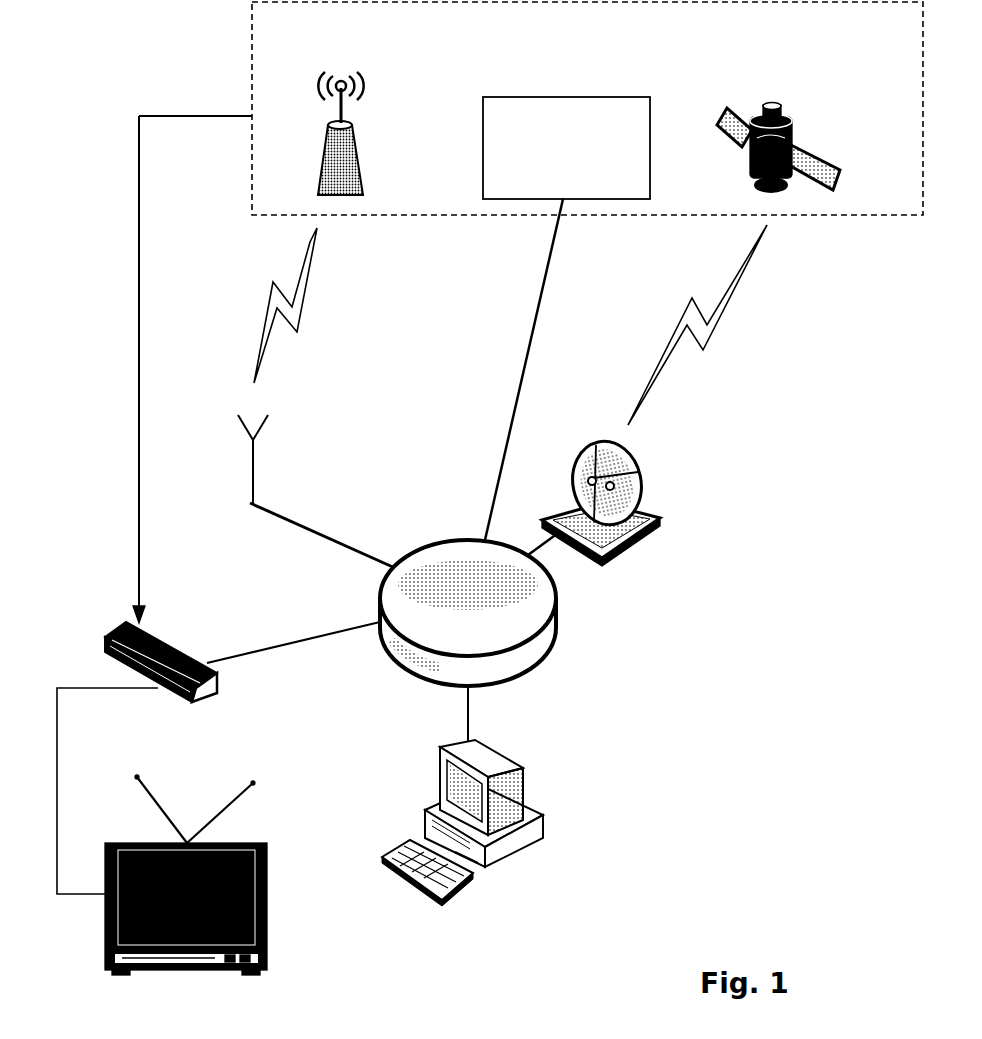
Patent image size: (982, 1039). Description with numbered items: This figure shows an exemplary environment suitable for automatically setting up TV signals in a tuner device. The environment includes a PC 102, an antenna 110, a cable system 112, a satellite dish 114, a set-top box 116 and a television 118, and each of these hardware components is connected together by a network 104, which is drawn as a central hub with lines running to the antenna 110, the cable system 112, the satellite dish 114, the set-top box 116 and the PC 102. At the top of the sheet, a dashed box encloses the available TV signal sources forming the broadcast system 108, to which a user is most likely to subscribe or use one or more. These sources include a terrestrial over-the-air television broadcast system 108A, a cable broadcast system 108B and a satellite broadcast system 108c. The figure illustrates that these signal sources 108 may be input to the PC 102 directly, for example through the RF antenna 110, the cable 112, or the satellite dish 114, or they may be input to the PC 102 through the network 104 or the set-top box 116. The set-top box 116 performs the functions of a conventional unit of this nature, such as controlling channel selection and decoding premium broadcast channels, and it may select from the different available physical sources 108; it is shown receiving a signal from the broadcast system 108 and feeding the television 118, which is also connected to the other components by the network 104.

The PC 102 is at (570, 857).
The network 104 is at (543, 641).
The broadcast system 108 is at (587, 108).
The terrestrial/OTA television broadcast system 108A is at (377, 98).
The cable broadcast system 108B is at (566, 129).
The satellite broadcast system 108c is at (745, 113).
The antenna 110 is at (253, 483).
The cable system 112 is at (505, 448).
The satellite dish 114 is at (665, 525).
The set-top box 116 is at (180, 650).
The television 118 is at (267, 928).